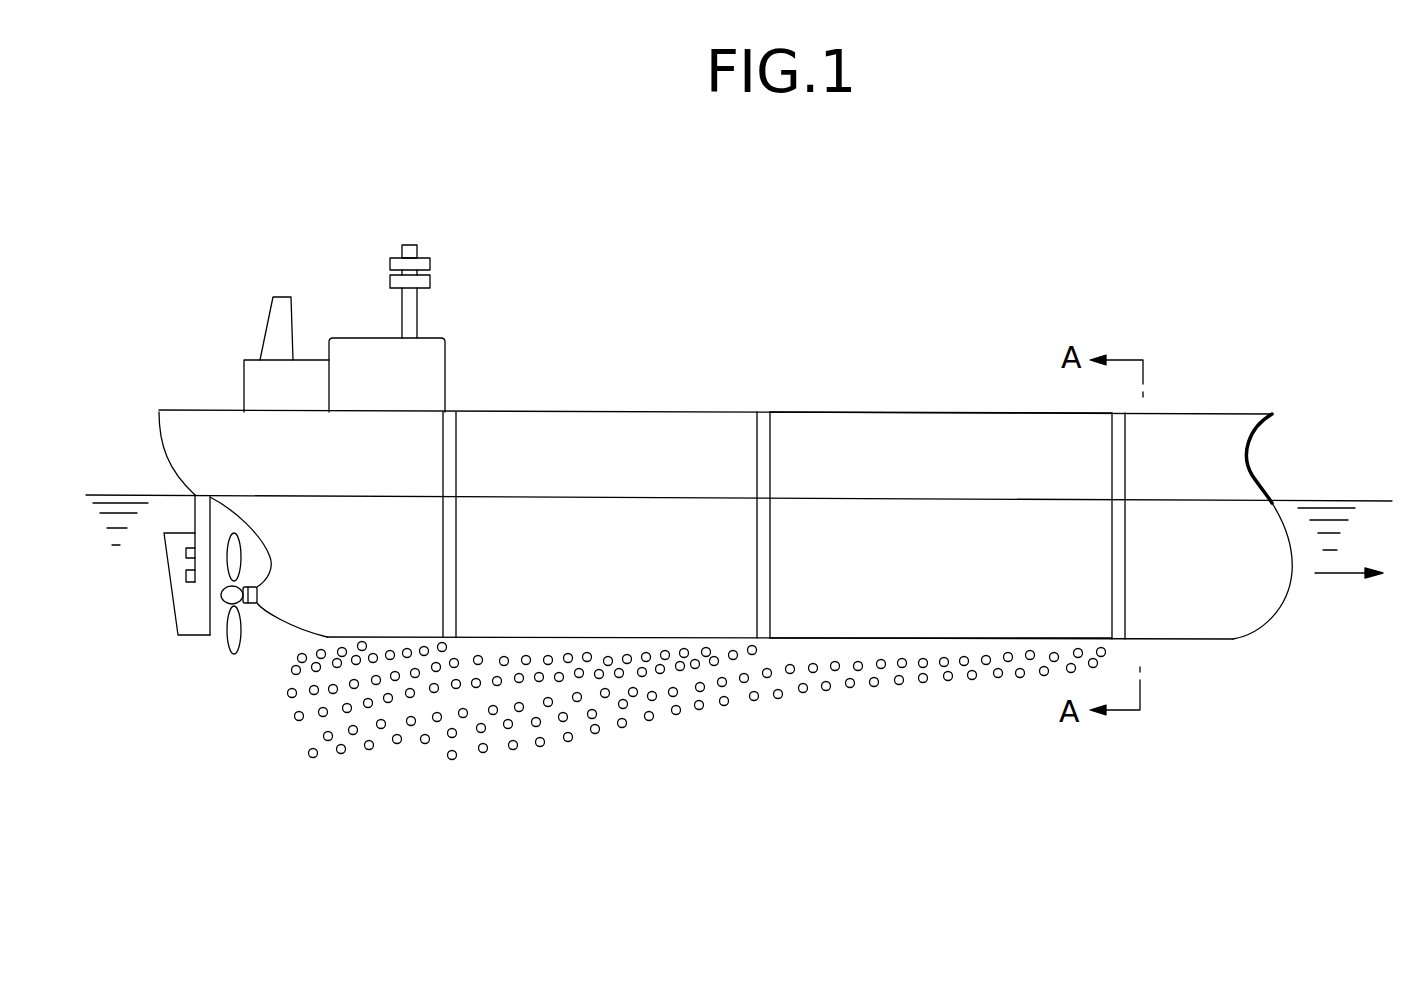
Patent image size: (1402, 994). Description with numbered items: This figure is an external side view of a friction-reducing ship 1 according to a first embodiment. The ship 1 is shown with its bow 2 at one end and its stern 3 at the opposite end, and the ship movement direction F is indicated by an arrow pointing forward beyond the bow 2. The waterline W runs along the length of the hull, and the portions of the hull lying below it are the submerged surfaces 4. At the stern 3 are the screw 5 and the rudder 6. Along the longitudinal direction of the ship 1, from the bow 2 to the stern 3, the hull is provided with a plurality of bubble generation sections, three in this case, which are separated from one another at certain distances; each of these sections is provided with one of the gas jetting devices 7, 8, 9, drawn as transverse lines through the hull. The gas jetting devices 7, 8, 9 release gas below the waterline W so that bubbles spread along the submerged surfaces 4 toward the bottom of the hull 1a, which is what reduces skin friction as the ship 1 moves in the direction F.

The ship 1 is at (730, 410).
The ship bottom 1a is at (860, 637).
The bow 2 is at (1243, 453).
The stern 3 is at (177, 438).
The submerged surfaces 4 is at (932, 525).
The screw 5 is at (242, 632).
The rudder 6 is at (178, 598).
The gas jetting device 7 is at (1108, 557).
The gas jetting device 8 is at (770, 570).
The gas jetting device 9 is at (457, 580).
The waterline W is at (678, 500).
The ship movement direction F is at (1337, 578).